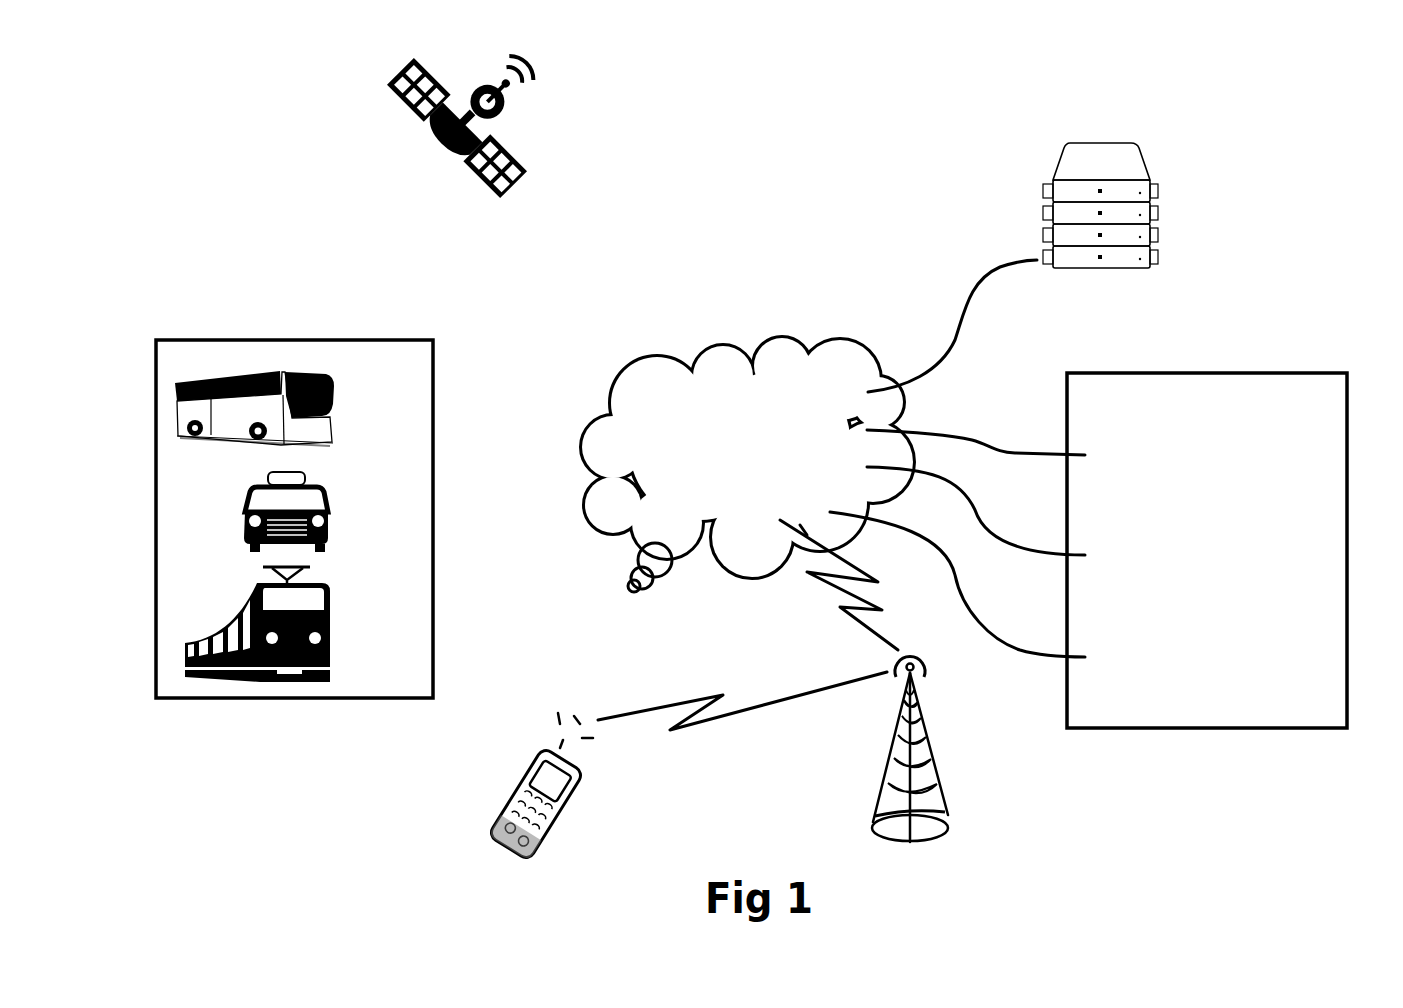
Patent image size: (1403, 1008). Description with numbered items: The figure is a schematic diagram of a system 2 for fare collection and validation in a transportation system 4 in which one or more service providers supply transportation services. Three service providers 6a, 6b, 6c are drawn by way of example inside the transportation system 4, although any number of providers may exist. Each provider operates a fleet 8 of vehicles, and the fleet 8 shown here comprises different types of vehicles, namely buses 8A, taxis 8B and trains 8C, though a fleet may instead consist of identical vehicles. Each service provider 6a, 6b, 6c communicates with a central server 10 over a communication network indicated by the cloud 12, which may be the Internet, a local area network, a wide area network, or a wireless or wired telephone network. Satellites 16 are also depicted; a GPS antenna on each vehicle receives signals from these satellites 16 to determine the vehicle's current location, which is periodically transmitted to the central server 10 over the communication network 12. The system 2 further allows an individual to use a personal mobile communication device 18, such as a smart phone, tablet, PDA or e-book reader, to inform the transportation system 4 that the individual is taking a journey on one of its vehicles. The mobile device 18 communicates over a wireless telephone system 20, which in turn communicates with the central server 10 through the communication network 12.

The system 2 is at (888, 114).
The transportation system 4 is at (1207, 530).
The service provider 6a is at (1212, 446).
The service provider 6b is at (1212, 556).
The service provider 6c is at (1212, 666).
The fleet 8 is at (294, 499).
The buses 8A is at (287, 408).
The taxis 8B is at (321, 512).
The trains 8C is at (285, 624).
The central server 10 is at (1100, 181).
The communication network 12 is at (747, 437).
The satellites 16 is at (483, 102).
The personal mobile communication device 18 is at (540, 771).
The wireless telephone system 20 is at (910, 719).